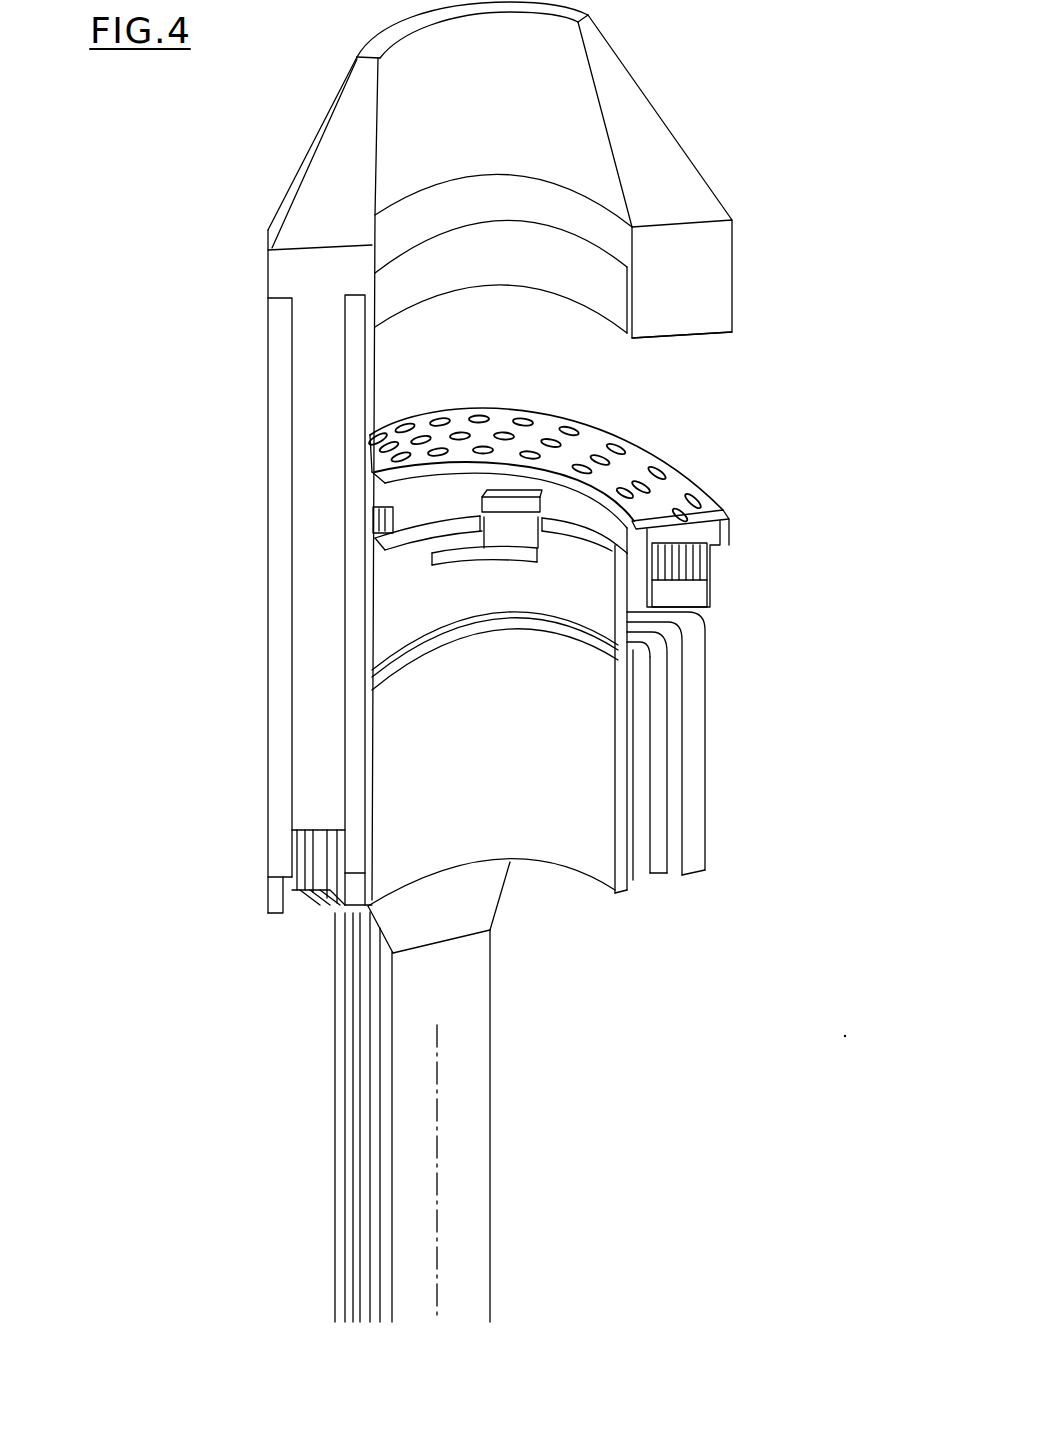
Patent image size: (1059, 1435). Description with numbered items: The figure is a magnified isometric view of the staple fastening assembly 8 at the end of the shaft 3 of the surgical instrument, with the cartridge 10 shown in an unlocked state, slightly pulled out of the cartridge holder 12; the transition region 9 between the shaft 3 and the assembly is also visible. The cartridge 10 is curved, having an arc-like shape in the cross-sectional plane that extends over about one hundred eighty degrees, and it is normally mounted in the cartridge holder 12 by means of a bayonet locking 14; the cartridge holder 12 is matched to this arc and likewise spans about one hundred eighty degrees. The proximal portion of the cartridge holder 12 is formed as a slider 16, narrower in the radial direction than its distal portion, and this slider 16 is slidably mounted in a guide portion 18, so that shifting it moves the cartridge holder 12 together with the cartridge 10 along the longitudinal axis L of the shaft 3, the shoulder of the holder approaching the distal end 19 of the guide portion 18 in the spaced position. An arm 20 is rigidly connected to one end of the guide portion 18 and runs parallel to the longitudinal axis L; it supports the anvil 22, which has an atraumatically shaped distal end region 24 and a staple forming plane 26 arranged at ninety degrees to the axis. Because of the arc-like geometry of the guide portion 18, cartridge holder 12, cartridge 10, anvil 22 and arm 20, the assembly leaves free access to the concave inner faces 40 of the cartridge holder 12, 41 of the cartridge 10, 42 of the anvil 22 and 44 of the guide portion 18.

The shaft 3 is at (493, 1150).
The staple fastening assembly 8 is at (238, 630).
The conical transition 9 is at (508, 936).
The cartridge 10 is at (700, 460).
The cartridge holder 12 is at (598, 607).
The bayonet locking 14 is at (512, 527).
The slider 16 is at (678, 763).
The guide portion 18 is at (697, 817).
The distal end of the guide portion 19 is at (705, 638).
The arm 20 is at (268, 388).
The anvil 22 is at (735, 280).
The distal end region 24 is at (645, 90).
The staple forming plane 26 is at (700, 343).
The concave inner face of the cartridge holder 40 is at (532, 601).
The concave inner face of the cartridge 41 is at (448, 513).
The concave inner face of the anvil 42 is at (514, 268).
The concave inner face of the guide portion 44 is at (442, 806).
The longitudinal axis L is at (442, 1237).